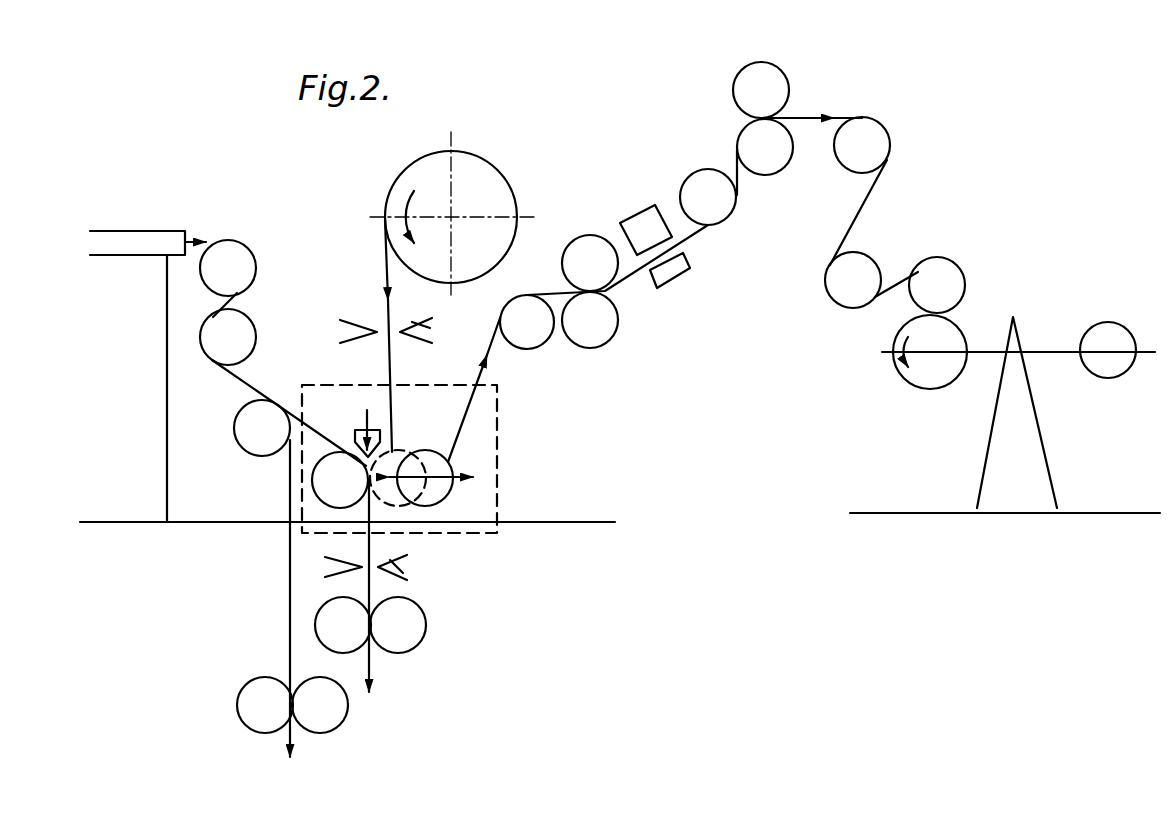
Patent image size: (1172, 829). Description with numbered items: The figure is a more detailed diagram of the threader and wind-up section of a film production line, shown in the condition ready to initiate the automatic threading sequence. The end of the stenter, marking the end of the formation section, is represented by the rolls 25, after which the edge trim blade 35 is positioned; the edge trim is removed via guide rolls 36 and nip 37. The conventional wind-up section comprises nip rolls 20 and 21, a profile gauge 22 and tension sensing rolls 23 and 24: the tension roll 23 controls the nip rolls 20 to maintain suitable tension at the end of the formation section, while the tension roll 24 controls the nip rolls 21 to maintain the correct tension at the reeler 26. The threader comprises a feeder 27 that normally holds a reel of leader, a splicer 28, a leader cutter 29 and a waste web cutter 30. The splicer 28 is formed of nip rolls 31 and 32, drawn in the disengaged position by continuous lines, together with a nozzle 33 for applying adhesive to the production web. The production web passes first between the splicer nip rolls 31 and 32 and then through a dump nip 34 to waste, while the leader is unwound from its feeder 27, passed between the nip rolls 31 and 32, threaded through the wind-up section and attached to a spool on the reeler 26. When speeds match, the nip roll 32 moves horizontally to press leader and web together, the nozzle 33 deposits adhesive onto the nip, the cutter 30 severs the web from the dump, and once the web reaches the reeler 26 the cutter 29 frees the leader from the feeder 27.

The nip rolls 20 is at (587, 250).
The nip rolls 21 is at (775, 92).
The profile gauge 22 is at (638, 218).
The tension sensing roll 23 is at (520, 310).
The tension sensing roll 24 is at (878, 145).
The rolls 25 is at (229, 254).
The reeler 26 is at (945, 333).
The feeder 27 is at (488, 180).
The splicer 28 is at (503, 423).
The leader cutter 29 is at (395, 336).
The waste web cutter 30 is at (400, 578).
The nip roll 31 is at (325, 488).
The nip roll 32 is at (445, 496).
The nozzle 33 is at (353, 437).
The dump nip 34 is at (412, 637).
The edge trim blade 35 is at (245, 371).
The guide rolls 36 is at (250, 445).
The nip 37 is at (248, 698).